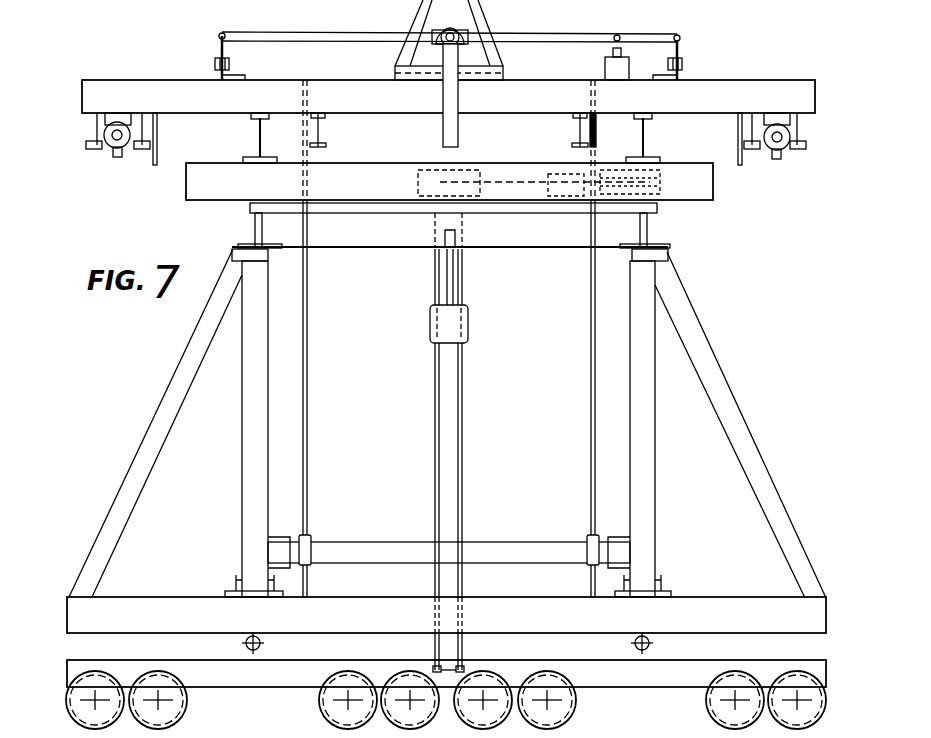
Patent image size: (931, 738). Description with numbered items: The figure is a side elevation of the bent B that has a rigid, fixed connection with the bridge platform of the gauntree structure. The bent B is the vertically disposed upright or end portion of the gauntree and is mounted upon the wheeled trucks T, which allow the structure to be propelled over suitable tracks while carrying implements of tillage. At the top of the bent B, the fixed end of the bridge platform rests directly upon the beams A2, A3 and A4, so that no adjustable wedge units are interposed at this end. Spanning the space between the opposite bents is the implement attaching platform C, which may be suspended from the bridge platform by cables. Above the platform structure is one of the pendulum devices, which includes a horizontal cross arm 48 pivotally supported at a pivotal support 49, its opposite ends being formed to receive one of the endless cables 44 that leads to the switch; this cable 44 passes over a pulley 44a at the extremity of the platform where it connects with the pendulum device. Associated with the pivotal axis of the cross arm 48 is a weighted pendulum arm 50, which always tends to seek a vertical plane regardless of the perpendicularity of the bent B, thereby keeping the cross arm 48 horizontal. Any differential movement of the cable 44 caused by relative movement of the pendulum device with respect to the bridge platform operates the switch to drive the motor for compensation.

The endless cable 44 is at (222, 38).
The pulley 44a is at (705, 52).
The horizontal cross arm 48 is at (546, 40).
The pivotal support 49 is at (440, 42).
The weighted pendulum arm 50 is at (443, 131).
The beam A2 is at (643, 141).
The beam A3 is at (689, 177).
The beam A4 is at (648, 229).
The bent B is at (446, 440).
The implement attaching platform C is at (536, 551).
The wheeled truck T is at (446, 678).